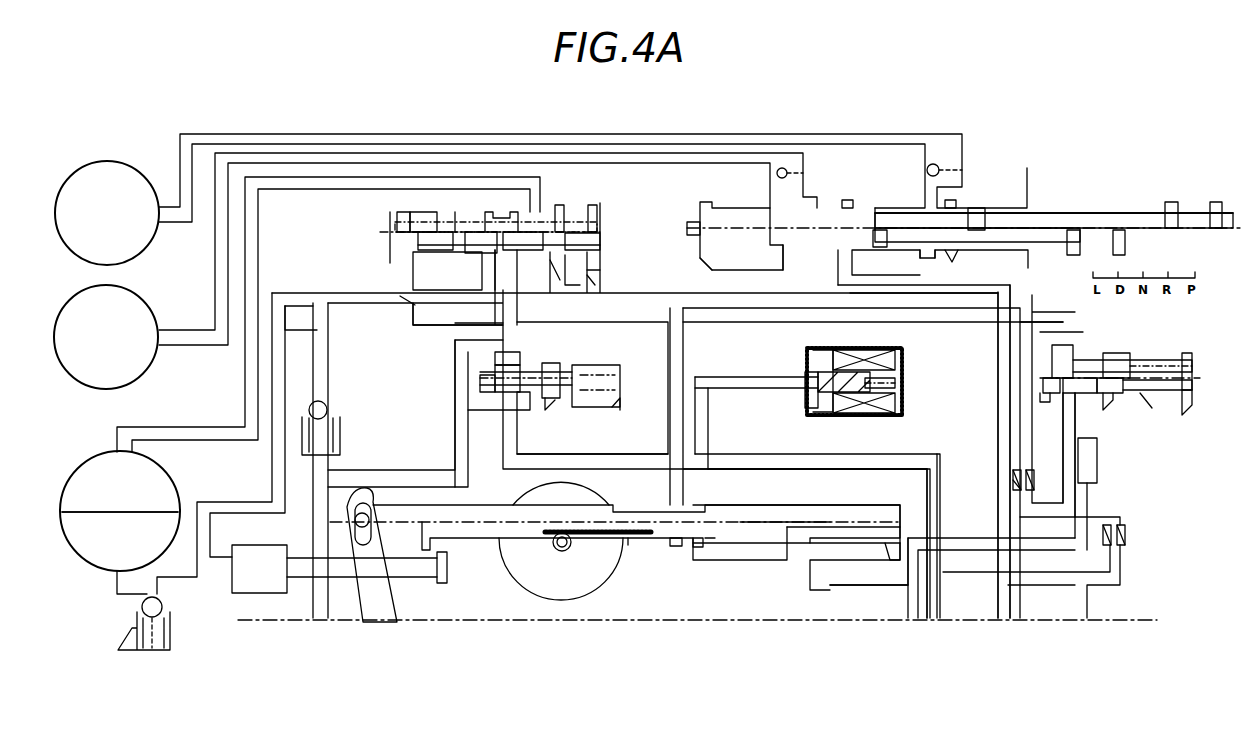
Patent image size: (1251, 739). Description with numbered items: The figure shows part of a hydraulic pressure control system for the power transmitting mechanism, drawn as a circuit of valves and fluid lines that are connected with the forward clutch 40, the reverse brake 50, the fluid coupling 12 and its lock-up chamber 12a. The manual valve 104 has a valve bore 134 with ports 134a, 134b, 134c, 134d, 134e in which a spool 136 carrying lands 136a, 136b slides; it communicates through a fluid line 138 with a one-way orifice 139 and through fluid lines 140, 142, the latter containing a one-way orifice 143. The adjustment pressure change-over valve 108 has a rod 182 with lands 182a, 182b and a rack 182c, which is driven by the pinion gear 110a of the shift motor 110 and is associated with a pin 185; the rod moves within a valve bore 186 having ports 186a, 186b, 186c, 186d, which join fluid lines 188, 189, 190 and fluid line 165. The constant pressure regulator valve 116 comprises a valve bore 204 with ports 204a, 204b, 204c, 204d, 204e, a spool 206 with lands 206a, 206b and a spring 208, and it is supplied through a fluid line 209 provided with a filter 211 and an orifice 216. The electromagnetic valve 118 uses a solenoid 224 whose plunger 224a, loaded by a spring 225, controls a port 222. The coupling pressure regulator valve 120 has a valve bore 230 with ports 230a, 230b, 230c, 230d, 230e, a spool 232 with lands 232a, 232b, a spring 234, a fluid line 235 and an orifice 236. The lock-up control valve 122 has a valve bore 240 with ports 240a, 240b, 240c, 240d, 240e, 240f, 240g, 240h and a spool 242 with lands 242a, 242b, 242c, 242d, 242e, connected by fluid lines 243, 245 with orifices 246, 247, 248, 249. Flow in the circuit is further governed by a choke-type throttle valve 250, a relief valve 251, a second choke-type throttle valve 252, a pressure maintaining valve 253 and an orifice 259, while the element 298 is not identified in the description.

The fluid coupling 12 is at (92, 564).
The lock-up chamber 12a is at (172, 480).
The forward clutch 40 is at (152, 300).
The reverse brake 50 is at (146, 180).
The manual valve 104 is at (990, 168).
The adjustment pressure change-over valve 108 is at (740, 540).
The shift motor 110 is at (500, 585).
The pinion gear 110a is at (567, 550).
The constant pressure regulator valve 116 is at (1140, 398).
The electromagnetic valve 118 is at (800, 372).
The coupling pressure regulator valve 120 is at (606, 432).
The lock-up control valve 122 is at (310, 250).
The valve bore 134 is at (1010, 208).
The port 134a is at (706, 262).
The port 134b is at (790, 250).
The port 134c is at (838, 270).
The port 134d is at (925, 258).
The port 134e is at (955, 258).
The spool 136 is at (1112, 213).
The land 136a is at (858, 215).
The land 136b is at (975, 212).
The fluid line 138 is at (891, 145).
The one-way orifice 139 is at (938, 165).
The fluid line 140 is at (998, 425).
The fluid line 142 is at (668, 155).
The one-way orifice 143 is at (787, 171).
The fluid line 165 is at (803, 471).
The rod 182 is at (470, 530).
The land 182a is at (673, 546).
The land 182b is at (855, 530).
The rack 182c is at (630, 545).
The pin 185 is at (370, 528).
The valve bore 186 is at (868, 505).
The port 186a is at (698, 548).
The port 186b is at (710, 548).
The port 186c is at (818, 548).
The port 186d is at (886, 548).
The fluid line 188 is at (684, 352).
The fluid line 189 is at (805, 585).
The fluid line 190 is at (708, 428).
The valve bore 204 is at (1165, 352).
The port 204a is at (1043, 388).
The port 204b is at (1068, 425).
The port 204c is at (1090, 393).
The port 204d is at (1115, 405).
The port 204e is at (1188, 410).
The spool 206 is at (1150, 372).
The land 206a is at (1065, 358).
The land 206b is at (1118, 362).
The spring 208 is at (1190, 385).
The fluid line 209 is at (975, 312).
The filter 211 is at (1097, 470).
The orifice 216 is at (1050, 358).
The port 222 is at (818, 408).
The solenoid 224 is at (890, 352).
The plunger 224a is at (833, 356).
The spring 225 is at (898, 385).
The valve bore 230 is at (612, 364).
The port 230a is at (480, 392).
The port 230b is at (475, 410).
The port 230c is at (527, 412).
The port 230d is at (550, 402).
The port 230e is at (618, 405).
The spool 232 is at (488, 385).
The land 232a is at (495, 378).
The land 232b is at (555, 368).
The spring 234 is at (608, 389).
The fluid line 235 is at (520, 265).
The orifice 236 is at (495, 358).
The valve bore 240 is at (565, 205).
The port 240a is at (418, 250).
The port 240b is at (430, 255).
The port 240c is at (455, 256).
The port 240d is at (430, 300).
The port 240e is at (485, 300).
The port 240f is at (560, 252).
The port 240g is at (600, 280).
The port 240h is at (585, 268).
The spool 242 is at (395, 238).
The land 242a is at (395, 220).
The land 242b is at (440, 226).
The land 242c is at (508, 218).
The land 242d is at (535, 215).
The land 242e is at (600, 217).
The fluid line 243 is at (258, 222).
The fluid line 245 is at (285, 360).
The orifice 246 is at (400, 296).
The orifice 247 is at (455, 212).
The orifice 248 is at (565, 275).
The orifice 249 is at (595, 285).
The choke-type throttle valve 250 is at (1013, 485).
The relief valve 251 is at (165, 606).
The choke-type throttle valve 252 is at (1125, 540).
The pressure maintaining valve 253 is at (330, 410).
The orifice 259 is at (418, 480).
The accumulator 298 is at (258, 545).